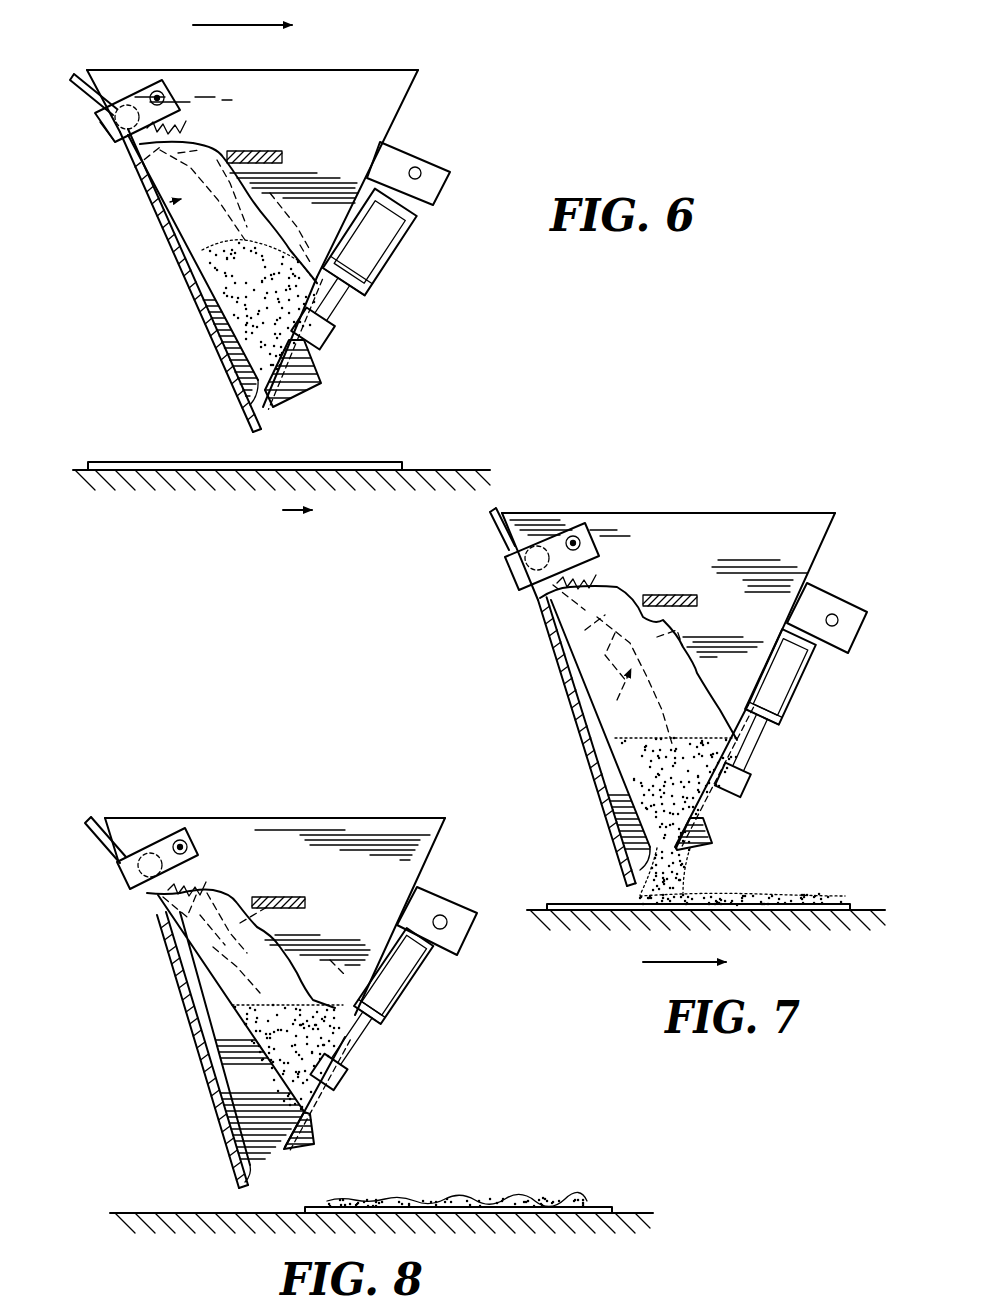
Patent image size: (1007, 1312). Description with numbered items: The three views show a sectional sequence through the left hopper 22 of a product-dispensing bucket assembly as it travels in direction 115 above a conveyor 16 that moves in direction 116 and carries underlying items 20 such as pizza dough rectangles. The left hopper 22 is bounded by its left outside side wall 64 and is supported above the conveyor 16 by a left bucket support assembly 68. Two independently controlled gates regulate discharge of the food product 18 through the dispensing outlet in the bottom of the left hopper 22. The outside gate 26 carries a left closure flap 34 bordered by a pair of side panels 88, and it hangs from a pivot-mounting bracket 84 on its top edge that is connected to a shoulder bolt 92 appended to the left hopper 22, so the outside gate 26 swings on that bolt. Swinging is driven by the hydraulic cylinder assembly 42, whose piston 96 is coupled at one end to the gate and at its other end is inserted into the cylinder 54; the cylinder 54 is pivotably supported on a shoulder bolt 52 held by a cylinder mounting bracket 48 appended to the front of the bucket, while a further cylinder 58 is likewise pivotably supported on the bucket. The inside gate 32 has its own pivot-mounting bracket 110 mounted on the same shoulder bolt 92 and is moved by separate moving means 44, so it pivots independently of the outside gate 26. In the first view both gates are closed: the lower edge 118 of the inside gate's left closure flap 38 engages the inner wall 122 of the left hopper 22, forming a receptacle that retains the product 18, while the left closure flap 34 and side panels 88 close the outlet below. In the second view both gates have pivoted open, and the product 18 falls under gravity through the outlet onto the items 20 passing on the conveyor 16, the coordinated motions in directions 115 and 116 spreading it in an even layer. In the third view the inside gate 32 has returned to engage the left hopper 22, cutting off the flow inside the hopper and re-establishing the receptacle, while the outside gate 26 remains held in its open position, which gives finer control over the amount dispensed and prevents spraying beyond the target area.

In FIG. 6, the conveyor 16 is at (446, 467).
In FIG. 7, the conveyor 16 is at (831, 940).
In FIG. 8, the conveyor 16 is at (635, 1205).
In FIG. 6, the product 18 is at (322, 343).
In FIG. 7, the product 18 is at (706, 791).
In FIG. 8, the product 18 is at (308, 1069).
In FIG. 6, the items 20 is at (402, 458).
In FIG. 7, the items 20 is at (852, 899).
In FIG. 8, the items 20 is at (594, 1201).
In FIG. 6, the left hopper 22 is at (436, 78).
In FIG. 7, the left hopper 22 is at (852, 487).
In FIG. 8, the left hopper 22 is at (435, 813).
In FIG. 6, the outside gate 26 is at (249, 291).
In FIG. 7, the outside gate 26 is at (633, 741).
In FIG. 8, the outside gate 26 is at (238, 1041).
In FIG. 6, the inside gate 32 is at (83, 108).
In FIG. 7, the inside gate 32 is at (493, 543).
In FIG. 8, the inside gate 32 is at (106, 869).
In FIG. 6, the left closure flap 34 is at (212, 327).
In FIG. 7, the left closure flap 34 is at (612, 796).
In FIG. 8, the left closure flap 34 is at (215, 1094).
In FIG. 6, the left closure flap 38 is at (205, 268).
In FIG. 7, the left closure flap 38 is at (615, 763).
In FIG. 8, the left closure flap 38 is at (213, 1006).
In FIG. 6, the hydraulic cylinder assembly 42 is at (409, 262).
In FIG. 7, the hydraulic cylinder assembly 42 is at (812, 708).
In FIG. 8, the hydraulic cylinder assembly 42 is at (402, 1021).
In FIG. 6, the moving means 44 is at (143, 207).
In FIG. 7, the moving means 44 is at (617, 666).
In FIG. 8, the moving means 44 is at (324, 977).
In FIG. 6, the cylinder mounting bracket 48 is at (435, 173).
In FIG. 7, the cylinder mounting bracket 48 is at (833, 606).
In FIG. 8, the cylinder mounting bracket 48 is at (428, 897).
In FIG. 6, the shoulder bolt 52 is at (416, 167).
In FIG. 7, the shoulder bolt 52 is at (838, 615).
In FIG. 6, the cylinder 54 is at (373, 279).
In FIG. 7, the cylinder 54 is at (787, 718).
In FIG. 8, the cylinder 54 is at (410, 1007).
In FIG. 6, the cylinder 58 is at (310, 178).
In FIG. 7, the cylinder 58 is at (683, 628).
In FIG. 8, the cylinder 58 is at (323, 934).
In FIG. 6, the left outside side wall 64 is at (358, 80).
In FIG. 7, the left outside side wall 64 is at (740, 535).
In FIG. 8, the left outside side wall 64 is at (333, 823).
In FIG. 6, the left bucket support assembly 68 is at (285, 148).
In FIG. 7, the left bucket support assembly 68 is at (688, 591).
In FIG. 8, the left bucket support assembly 68 is at (299, 892).
In FIG. 6, the pivot-mounting bracket 84 is at (185, 118).
In FIG. 7, the pivot-mounting bracket 84 is at (600, 561).
In FIG. 8, the pivot-mounting bracket 84 is at (200, 871).
In FIG. 6, the side panels 88 is at (318, 391).
In FIG. 7, the side panels 88 is at (713, 841).
In FIG. 8, the side panels 88 is at (317, 1146).
In FIG. 6, the left shoulder bolt 92 is at (163, 93).
In FIG. 7, the left shoulder bolt 92 is at (574, 536).
In FIG. 8, the left shoulder bolt 92 is at (185, 842).
In FIG. 6, the piston 96 is at (347, 302).
In FIG. 7, the piston 96 is at (752, 728).
In FIG. 8, the piston 96 is at (355, 1040).
In FIG. 6, the pivot-mounting bracket 110 is at (110, 138).
In FIG. 6, the direction 115 is at (257, 30).
In FIG. 7, the direction 116 is at (492, 736).
In FIG. 6, the lower edge 118 is at (260, 382).
In FIG. 7, the lower edge 118 is at (637, 826).
In FIG. 8, the lower edge 118 is at (237, 1134).
In FIG. 6, the inner wall 122 is at (252, 409).
In FIG. 7, the inner wall 122 is at (684, 816).
In FIG. 8, the inner wall 122 is at (237, 1151).